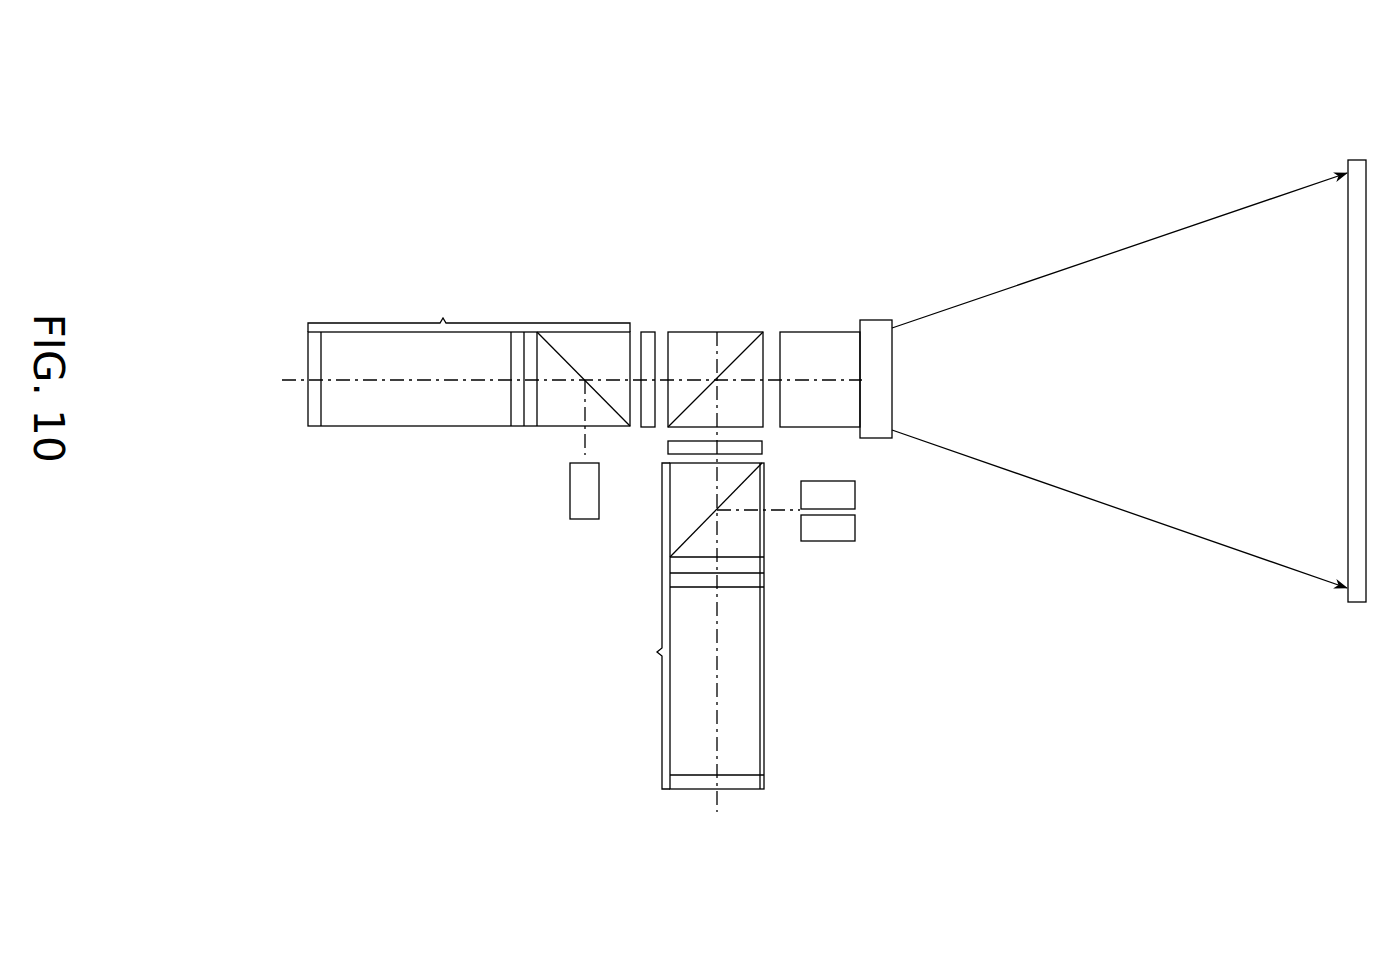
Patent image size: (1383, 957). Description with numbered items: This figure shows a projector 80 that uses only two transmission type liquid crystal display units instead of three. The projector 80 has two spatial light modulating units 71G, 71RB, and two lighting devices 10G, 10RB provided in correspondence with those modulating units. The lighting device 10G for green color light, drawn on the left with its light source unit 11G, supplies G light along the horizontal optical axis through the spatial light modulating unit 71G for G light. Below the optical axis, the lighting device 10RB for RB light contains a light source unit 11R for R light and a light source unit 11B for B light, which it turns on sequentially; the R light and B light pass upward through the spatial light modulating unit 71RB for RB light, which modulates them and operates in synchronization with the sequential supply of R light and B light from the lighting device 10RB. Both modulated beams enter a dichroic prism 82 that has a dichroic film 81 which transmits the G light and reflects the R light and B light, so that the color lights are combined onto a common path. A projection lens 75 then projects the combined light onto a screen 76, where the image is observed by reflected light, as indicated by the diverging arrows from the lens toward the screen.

The projector 80 is at (545, 82).
The lighting device for green color light 10G is at (469, 358).
The spatial light modulating unit for G light 71G is at (652, 330).
The dichroic prism 82 is at (698, 330).
The dichroic film 81 is at (750, 340).
The projection lens 75 is at (884, 326).
The screen 76 is at (1358, 162).
The spatial light modulating unit for RB light 71RB is at (757, 447).
The lighting device for RB light 10RB is at (674, 626).
The light source unit for R light 11R is at (848, 492).
The light source unit for B light 11B is at (848, 533).
The light source unit for G light 11G is at (580, 492).